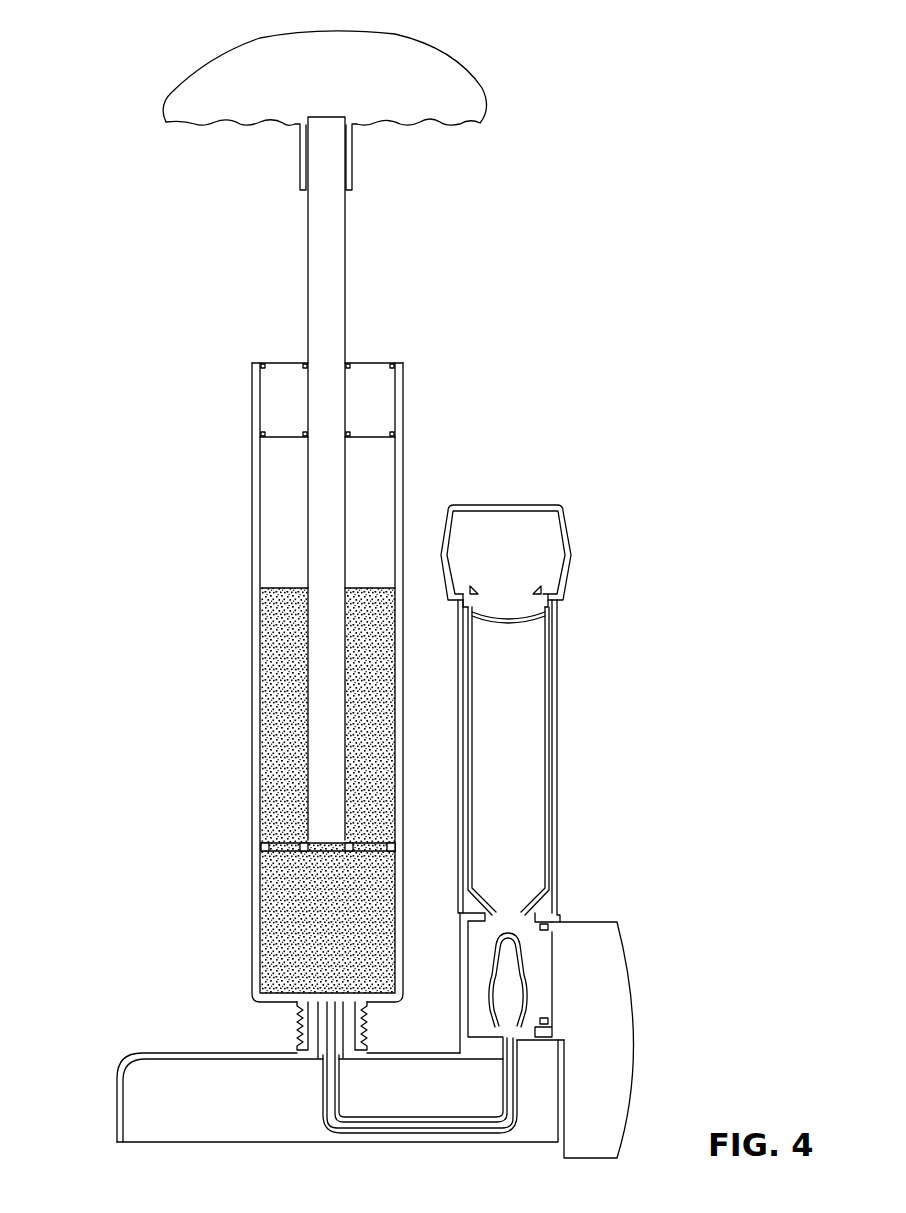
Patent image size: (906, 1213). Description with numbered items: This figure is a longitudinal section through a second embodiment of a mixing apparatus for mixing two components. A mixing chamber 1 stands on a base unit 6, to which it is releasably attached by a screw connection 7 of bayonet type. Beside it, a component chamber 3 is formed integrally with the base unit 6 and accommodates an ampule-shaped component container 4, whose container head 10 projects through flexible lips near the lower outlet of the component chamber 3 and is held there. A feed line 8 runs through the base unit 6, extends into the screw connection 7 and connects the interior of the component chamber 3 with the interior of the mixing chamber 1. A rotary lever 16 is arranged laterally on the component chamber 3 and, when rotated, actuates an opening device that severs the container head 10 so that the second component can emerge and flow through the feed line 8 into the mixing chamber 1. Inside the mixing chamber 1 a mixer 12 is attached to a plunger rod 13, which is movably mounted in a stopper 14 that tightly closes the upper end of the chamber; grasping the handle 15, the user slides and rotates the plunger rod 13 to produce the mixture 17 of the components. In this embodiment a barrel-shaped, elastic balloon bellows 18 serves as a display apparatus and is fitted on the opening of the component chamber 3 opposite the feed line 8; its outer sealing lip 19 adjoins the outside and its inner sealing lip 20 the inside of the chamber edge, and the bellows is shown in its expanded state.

The mixing chamber 1 is at (252, 588).
The component chamber 3 is at (557, 683).
The component container 4 is at (549, 740).
The base unit 6 is at (200, 1112).
The screw connection 7 is at (297, 1030).
The feed line 8 is at (512, 1090).
The container head 10 is at (525, 975).
The mixer 12 is at (275, 847).
The plunger rod 13 is at (330, 512).
The stopper 14 is at (295, 407).
The handle 15 is at (257, 88).
The rotary lever 16 is at (612, 1040).
The mixture 17 is at (275, 690).
The balloon bellows 18 is at (512, 505).
The outer sealing lip 19 is at (557, 620).
The inner sealing lip 20 is at (562, 592).